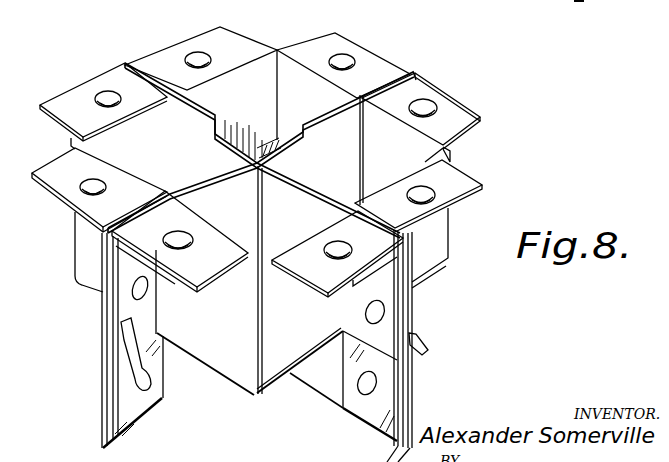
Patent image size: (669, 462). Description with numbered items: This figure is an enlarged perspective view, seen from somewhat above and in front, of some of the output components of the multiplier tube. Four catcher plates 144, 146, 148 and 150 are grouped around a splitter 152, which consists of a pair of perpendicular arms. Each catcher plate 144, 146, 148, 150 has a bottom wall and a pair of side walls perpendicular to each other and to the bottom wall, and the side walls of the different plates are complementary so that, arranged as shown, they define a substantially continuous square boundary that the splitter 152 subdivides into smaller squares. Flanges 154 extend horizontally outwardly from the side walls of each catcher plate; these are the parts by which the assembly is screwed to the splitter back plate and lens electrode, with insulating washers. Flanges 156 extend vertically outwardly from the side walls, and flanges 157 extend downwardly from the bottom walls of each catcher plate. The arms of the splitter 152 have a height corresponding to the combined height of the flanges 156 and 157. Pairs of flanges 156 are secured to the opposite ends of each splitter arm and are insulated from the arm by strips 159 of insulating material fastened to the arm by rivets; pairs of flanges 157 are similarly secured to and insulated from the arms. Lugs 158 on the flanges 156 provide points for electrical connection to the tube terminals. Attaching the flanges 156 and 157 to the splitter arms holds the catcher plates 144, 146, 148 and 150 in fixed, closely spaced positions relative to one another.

The catcher plate 144 is at (282, 64).
The catcher plate 146 is at (116, 163).
The catcher plate 148 is at (262, 257).
The catcher plate 150 is at (433, 148).
The splitter 152 is at (232, 178).
The flanges 154 is at (233, 40).
The flanges 156 is at (132, 310).
The flanges 157 is at (177, 395).
The lugs 158 is at (133, 362).
The strips of insulating material 159 is at (415, 85).